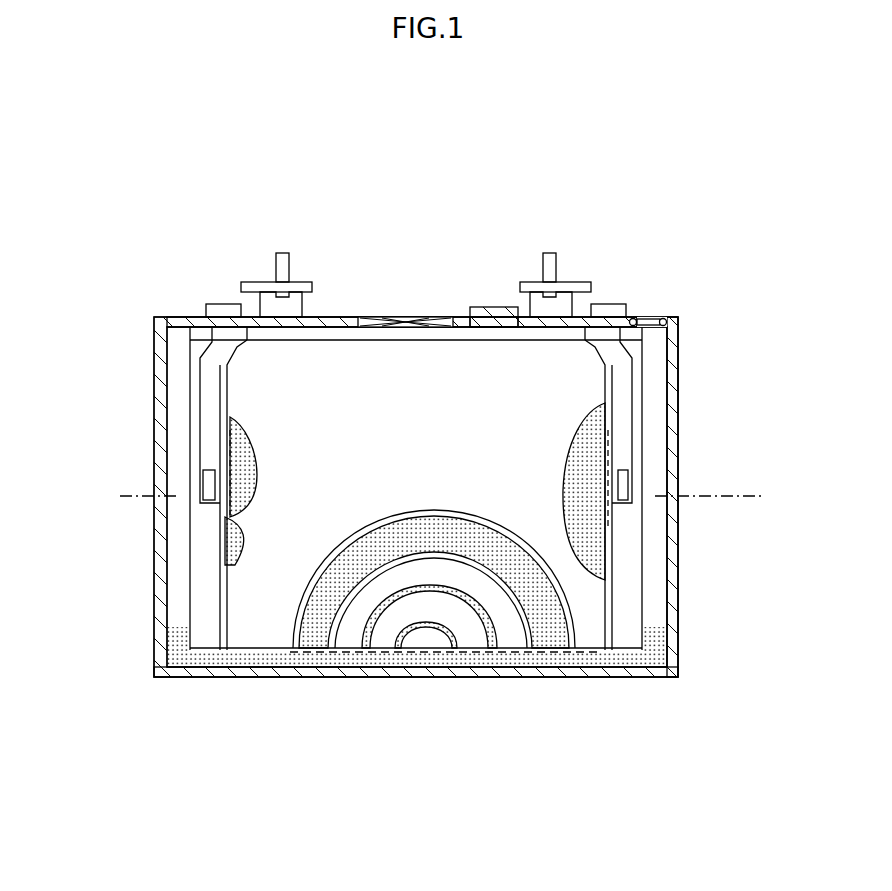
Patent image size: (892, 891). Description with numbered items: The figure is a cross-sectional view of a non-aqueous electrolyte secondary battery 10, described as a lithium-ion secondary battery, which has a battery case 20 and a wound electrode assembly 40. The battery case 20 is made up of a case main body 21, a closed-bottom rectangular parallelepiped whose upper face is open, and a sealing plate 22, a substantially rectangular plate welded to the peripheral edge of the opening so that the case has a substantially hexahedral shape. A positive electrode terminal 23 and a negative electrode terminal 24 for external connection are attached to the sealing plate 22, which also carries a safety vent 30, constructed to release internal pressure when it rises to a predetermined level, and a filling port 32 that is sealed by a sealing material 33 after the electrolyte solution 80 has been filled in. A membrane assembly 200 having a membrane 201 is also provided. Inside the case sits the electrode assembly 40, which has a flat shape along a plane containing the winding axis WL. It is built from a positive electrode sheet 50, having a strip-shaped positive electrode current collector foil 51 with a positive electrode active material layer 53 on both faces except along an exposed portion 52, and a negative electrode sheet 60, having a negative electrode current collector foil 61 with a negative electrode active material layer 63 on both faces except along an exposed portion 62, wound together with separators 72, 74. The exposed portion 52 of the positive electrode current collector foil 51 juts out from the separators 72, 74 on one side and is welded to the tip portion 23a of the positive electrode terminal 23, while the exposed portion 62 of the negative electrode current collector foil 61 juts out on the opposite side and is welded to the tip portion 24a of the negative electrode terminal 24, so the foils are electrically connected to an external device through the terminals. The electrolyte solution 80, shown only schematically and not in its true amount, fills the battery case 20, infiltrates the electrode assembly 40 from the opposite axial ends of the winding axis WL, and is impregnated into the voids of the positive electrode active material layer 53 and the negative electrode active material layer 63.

The non-aqueous electrolyte secondary battery 10 is at (147, 283).
The battery case 20 is at (522, 685).
The case main body 21 is at (625, 635).
The sealing plate 22 is at (351, 317).
The positive electrode terminal 23 is at (270, 269).
The tip portion of the positive electrode terminal 23a is at (201, 482).
The negative electrode terminal 24 is at (563, 268).
The tip portion of the negative electrode terminal 24a is at (630, 478).
The safety vent 30 is at (408, 317).
The filling port 32 is at (502, 287).
The sealing material 33 is at (490, 307).
The electrode assembly 40 is at (323, 365).
The positive electrode sheet 50 is at (423, 555).
The positive electrode current collector foil 51 is at (190, 610).
The exposed portion 52 is at (207, 627).
The positive electrode active material layer 53 is at (253, 450).
The negative electrode sheet 60 is at (225, 549).
The negative electrode current collector foil 61 is at (675, 558).
The exposed portion 62 is at (670, 668).
The negative electrode active material layer 63 is at (573, 438).
The separator 72 is at (258, 590).
The separator 74 is at (225, 522).
The electrolyte solution 80 is at (613, 660).
The membrane assembly 200 is at (642, 313).
The membrane 201 is at (653, 317).
The winding axis WL is at (457, 485).